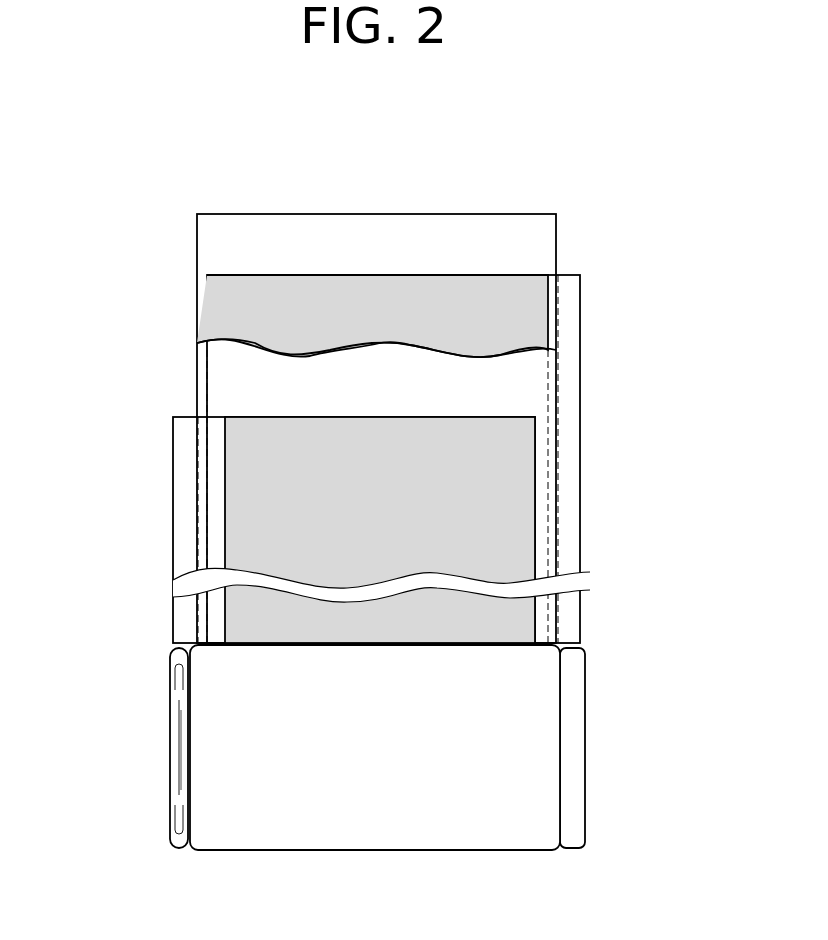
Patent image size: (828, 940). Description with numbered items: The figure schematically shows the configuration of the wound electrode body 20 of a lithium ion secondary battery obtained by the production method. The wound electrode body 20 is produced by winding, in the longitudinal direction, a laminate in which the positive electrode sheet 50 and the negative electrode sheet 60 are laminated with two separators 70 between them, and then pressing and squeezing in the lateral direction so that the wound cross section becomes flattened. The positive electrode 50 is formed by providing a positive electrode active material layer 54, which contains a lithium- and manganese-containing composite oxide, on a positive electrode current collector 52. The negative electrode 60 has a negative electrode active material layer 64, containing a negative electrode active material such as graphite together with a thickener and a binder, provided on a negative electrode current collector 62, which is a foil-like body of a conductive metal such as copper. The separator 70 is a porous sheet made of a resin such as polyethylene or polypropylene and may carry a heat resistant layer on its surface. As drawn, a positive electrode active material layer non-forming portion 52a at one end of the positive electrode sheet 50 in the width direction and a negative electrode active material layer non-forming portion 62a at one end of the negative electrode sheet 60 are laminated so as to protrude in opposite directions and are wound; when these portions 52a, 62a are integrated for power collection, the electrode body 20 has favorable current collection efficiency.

The wound electrode body 20 is at (443, 827).
The positive electrode 50 is at (284, 599).
The positive electrode current collector 52 is at (172, 563).
The positive electrode active material layer non-forming portion 52a is at (187, 733).
The positive electrode active material layer 54 is at (240, 438).
The negative electrode 60 is at (453, 559).
The negative electrode current collector 62 is at (582, 467).
The negative electrode active material layer non-forming portion 62a is at (566, 435).
The negative electrode active material layer 64 is at (542, 300).
The separator 70 is at (222, 237).